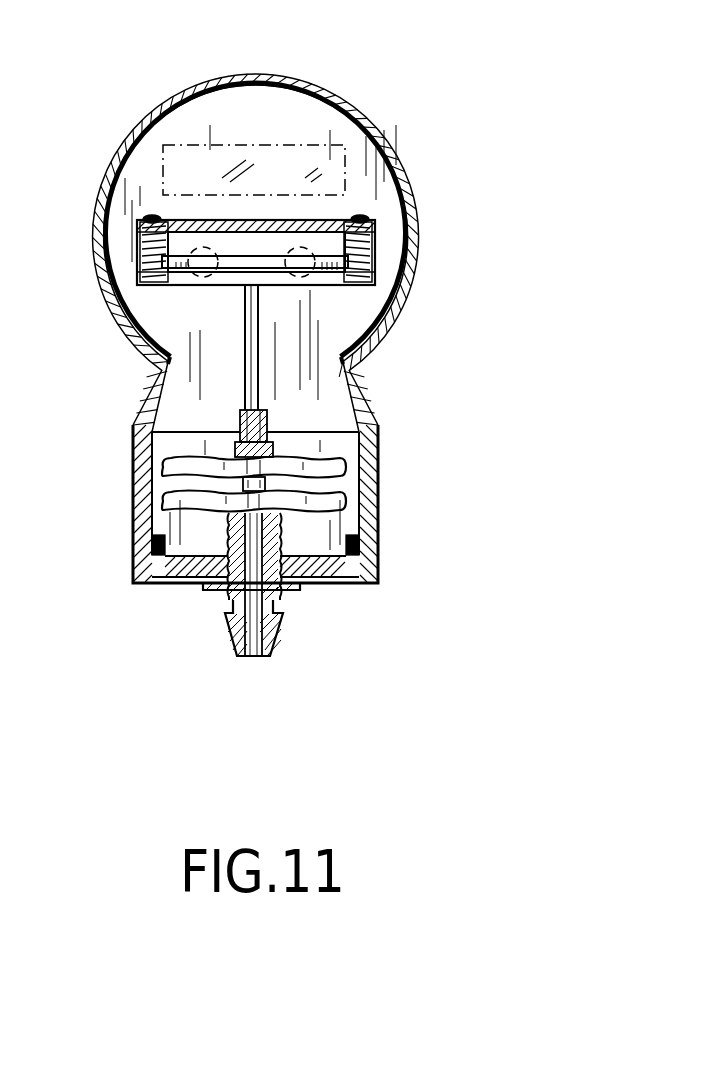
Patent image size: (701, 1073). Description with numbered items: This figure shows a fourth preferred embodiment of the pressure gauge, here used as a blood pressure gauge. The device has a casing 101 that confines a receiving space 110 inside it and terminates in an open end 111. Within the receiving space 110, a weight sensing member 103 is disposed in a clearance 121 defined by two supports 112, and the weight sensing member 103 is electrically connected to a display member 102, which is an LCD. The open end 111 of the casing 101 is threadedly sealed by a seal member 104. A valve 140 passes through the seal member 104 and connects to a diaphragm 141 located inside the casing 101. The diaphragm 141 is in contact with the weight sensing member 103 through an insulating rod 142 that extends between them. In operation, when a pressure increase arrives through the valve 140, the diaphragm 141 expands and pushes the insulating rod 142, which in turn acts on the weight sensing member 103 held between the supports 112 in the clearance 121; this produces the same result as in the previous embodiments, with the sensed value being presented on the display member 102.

The casing 101 is at (138, 128).
The display member 102 is at (332, 140).
The weight sensing member 103 is at (374, 262).
The seal member 104 is at (212, 630).
The receiving space 110 is at (358, 322).
The open end 111 is at (195, 402).
The supports 112 is at (136, 232).
The clearance 121 is at (136, 263).
The valve 140 is at (280, 627).
The diaphragm 141 is at (348, 494).
The insulating rod 142 is at (262, 398).